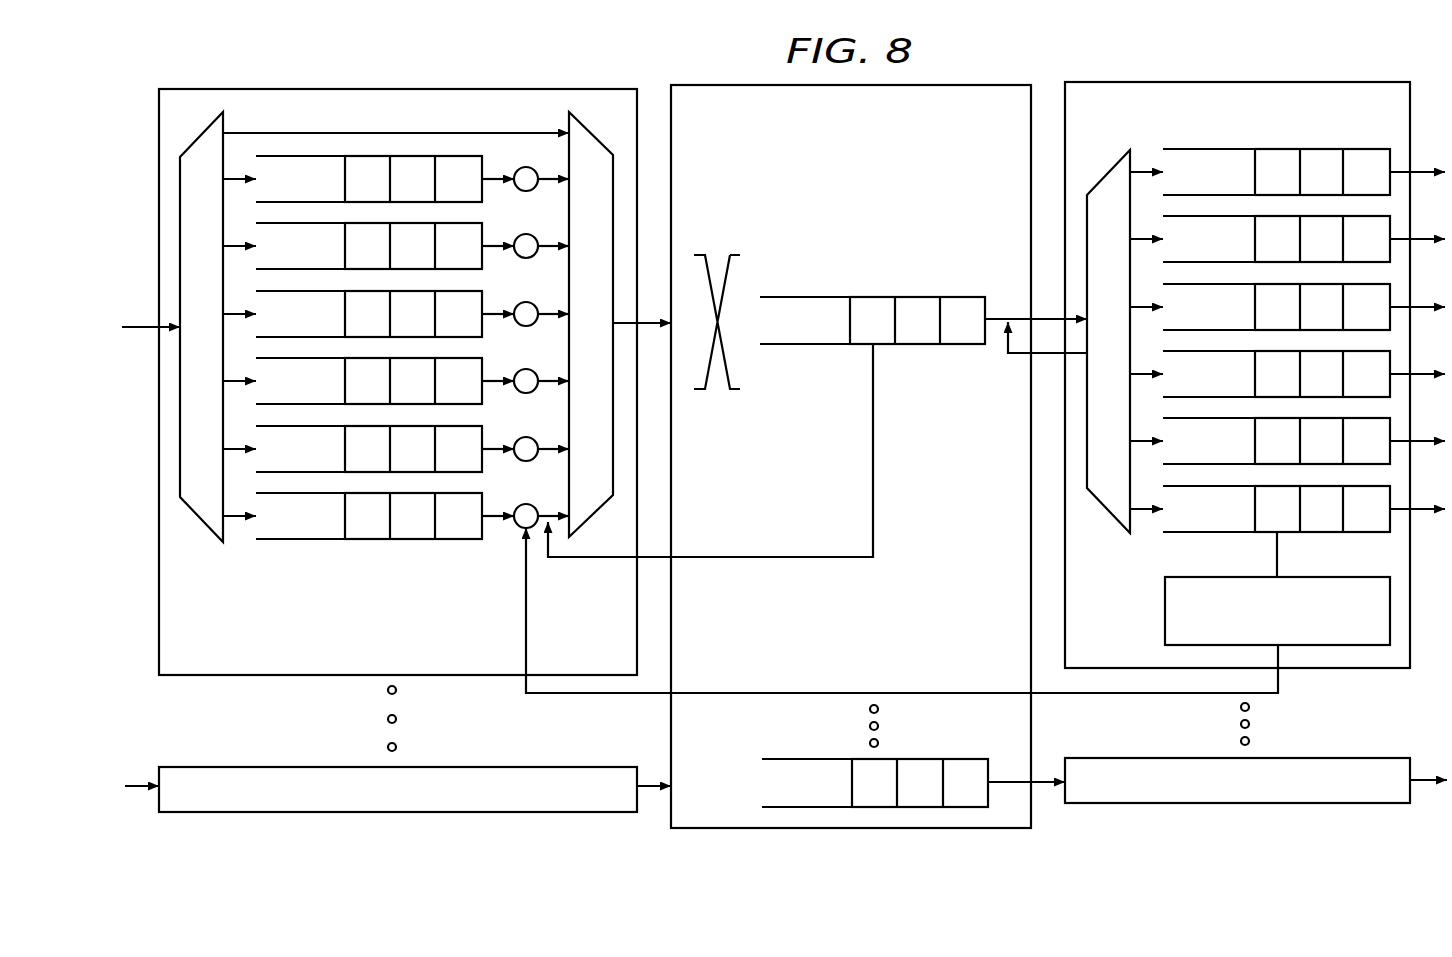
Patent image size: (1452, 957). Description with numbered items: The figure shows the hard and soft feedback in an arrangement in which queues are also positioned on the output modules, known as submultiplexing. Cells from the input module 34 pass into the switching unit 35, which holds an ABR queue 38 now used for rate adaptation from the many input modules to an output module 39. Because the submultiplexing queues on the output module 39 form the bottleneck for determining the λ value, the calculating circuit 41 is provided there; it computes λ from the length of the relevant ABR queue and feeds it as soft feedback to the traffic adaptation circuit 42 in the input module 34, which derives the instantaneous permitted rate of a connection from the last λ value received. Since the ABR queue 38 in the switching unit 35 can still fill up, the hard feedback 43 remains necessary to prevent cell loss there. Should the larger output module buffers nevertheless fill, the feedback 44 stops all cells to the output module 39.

The input module 34 is at (395, 88).
The switching unit 35 is at (728, 85).
The ABR queue 38 is at (918, 345).
The output module 39 is at (1225, 82).
The calculating circuit 41 is at (1292, 622).
The traffic adaptation circuit 42 is at (521, 504).
The hard feedback 43 is at (774, 556).
The feedback 44 is at (1019, 355).